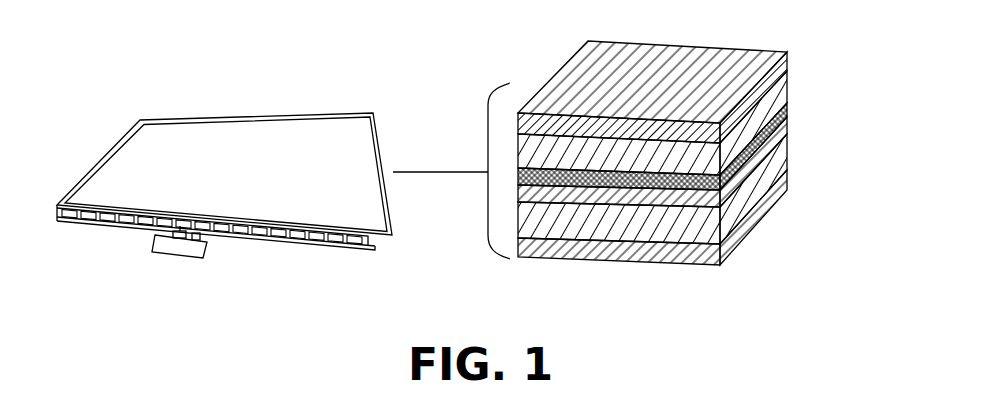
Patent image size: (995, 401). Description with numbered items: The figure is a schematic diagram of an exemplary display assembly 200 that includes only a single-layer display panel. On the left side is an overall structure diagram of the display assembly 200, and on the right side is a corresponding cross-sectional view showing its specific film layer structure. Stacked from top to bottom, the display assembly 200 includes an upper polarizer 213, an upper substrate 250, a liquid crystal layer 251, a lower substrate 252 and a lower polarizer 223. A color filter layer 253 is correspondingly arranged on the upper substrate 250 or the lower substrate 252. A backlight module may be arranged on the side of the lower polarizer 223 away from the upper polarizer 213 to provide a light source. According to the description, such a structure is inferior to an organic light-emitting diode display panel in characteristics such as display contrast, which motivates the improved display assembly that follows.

The display assembly 200 is at (273, 120).
The upper polarizer 213 is at (789, 57).
The upper substrate 250 is at (781, 103).
The color filter layer 253 is at (783, 118).
The liquid crystal layer 251 is at (782, 136).
The lower substrate 252 is at (781, 168).
The lower polarizer 223 is at (778, 197).